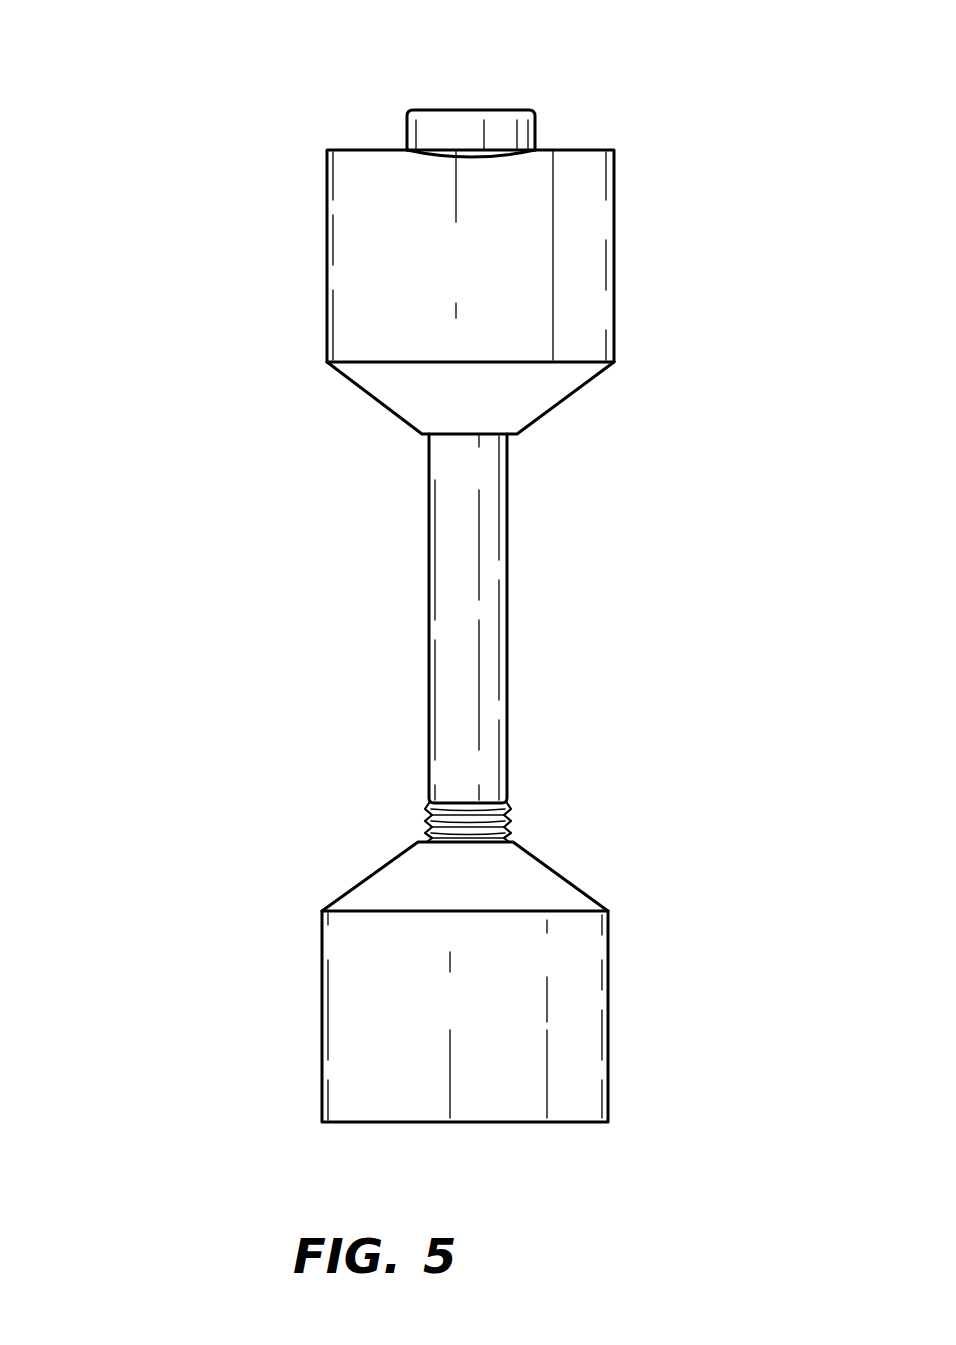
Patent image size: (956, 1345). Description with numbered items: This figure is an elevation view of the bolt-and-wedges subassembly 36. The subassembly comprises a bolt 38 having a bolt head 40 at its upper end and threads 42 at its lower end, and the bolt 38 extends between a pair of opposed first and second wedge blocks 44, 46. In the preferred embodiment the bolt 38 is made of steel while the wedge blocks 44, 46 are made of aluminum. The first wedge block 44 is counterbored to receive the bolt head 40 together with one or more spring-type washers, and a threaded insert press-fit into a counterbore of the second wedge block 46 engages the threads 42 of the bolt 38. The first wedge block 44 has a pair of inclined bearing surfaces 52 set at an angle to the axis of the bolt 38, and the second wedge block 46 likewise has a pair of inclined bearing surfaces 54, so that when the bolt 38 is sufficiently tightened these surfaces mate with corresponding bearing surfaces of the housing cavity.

The bolt-and-wedges subassembly 36 is at (228, 226).
The bolt 38 is at (455, 623).
The bolt head 40 is at (500, 127).
The threads 42 is at (487, 825).
The first wedge block 44 is at (583, 257).
The second wedge block 46 is at (578, 992).
The inclined bearing surfaces 52 is at (370, 398).
The inclined bearing surfaces 54 is at (370, 875).